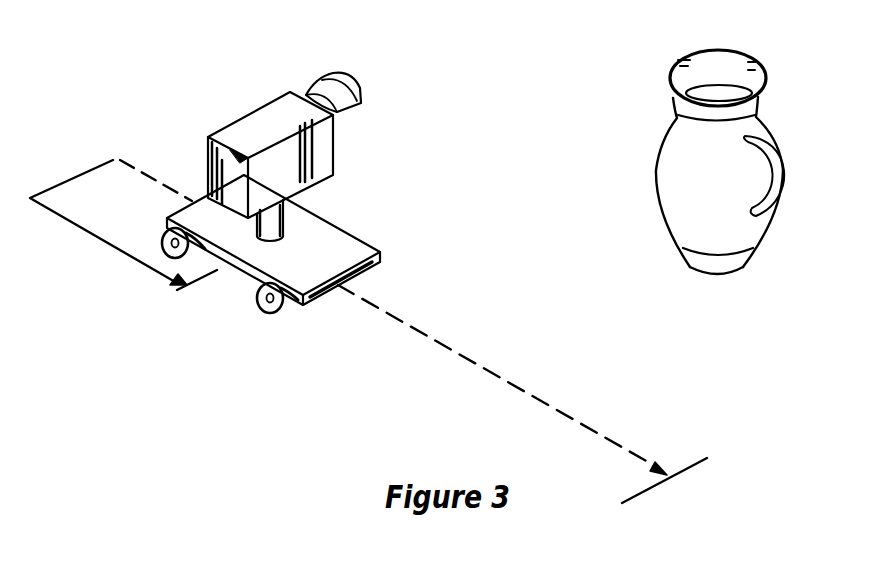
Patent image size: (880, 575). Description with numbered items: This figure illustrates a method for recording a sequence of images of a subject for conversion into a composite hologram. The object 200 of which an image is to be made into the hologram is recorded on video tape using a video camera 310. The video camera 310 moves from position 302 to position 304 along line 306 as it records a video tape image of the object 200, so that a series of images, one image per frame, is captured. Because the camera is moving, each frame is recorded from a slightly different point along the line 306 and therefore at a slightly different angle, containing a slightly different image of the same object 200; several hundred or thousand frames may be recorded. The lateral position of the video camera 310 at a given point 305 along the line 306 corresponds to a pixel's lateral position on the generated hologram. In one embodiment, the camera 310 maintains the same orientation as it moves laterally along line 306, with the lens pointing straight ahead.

The object 200 is at (736, 50).
The starting position 302 is at (110, 160).
The ending position 304 is at (673, 477).
The point along the line 305 is at (212, 273).
The line 306 is at (430, 339).
The video camera 310 is at (357, 88).